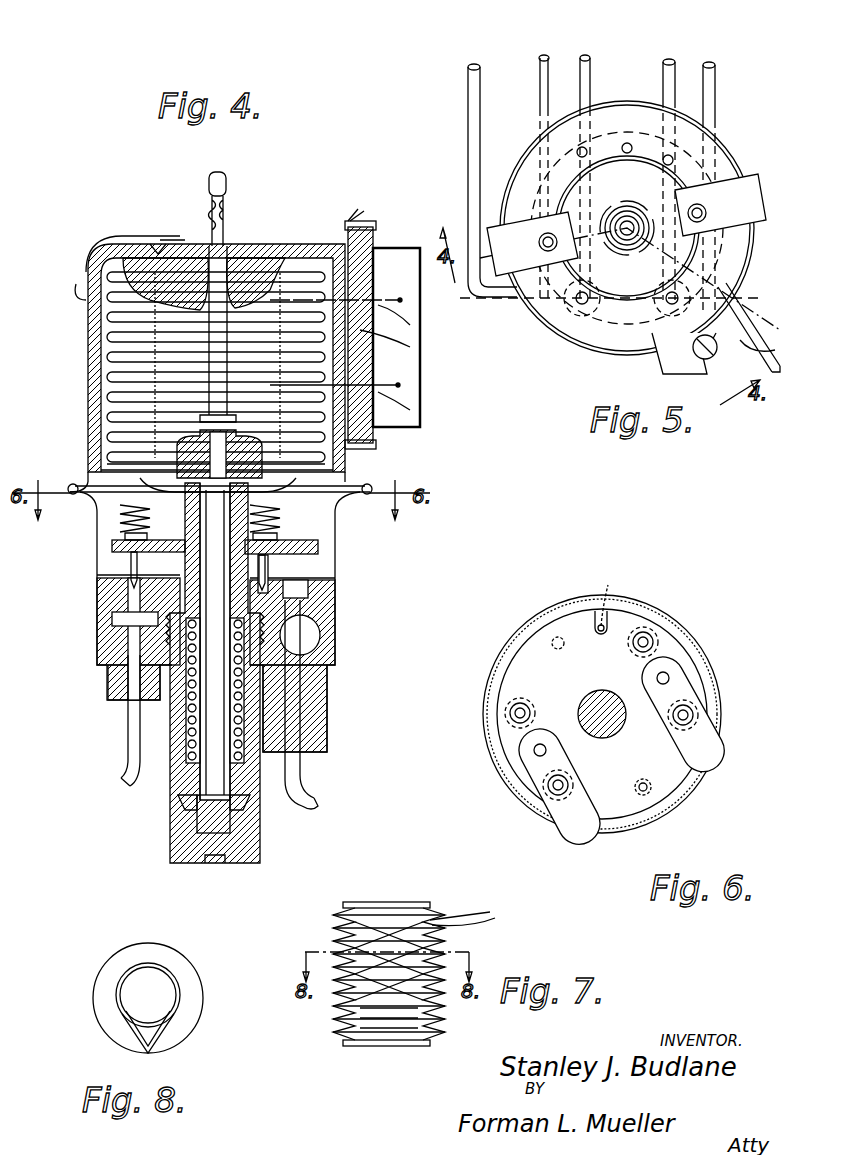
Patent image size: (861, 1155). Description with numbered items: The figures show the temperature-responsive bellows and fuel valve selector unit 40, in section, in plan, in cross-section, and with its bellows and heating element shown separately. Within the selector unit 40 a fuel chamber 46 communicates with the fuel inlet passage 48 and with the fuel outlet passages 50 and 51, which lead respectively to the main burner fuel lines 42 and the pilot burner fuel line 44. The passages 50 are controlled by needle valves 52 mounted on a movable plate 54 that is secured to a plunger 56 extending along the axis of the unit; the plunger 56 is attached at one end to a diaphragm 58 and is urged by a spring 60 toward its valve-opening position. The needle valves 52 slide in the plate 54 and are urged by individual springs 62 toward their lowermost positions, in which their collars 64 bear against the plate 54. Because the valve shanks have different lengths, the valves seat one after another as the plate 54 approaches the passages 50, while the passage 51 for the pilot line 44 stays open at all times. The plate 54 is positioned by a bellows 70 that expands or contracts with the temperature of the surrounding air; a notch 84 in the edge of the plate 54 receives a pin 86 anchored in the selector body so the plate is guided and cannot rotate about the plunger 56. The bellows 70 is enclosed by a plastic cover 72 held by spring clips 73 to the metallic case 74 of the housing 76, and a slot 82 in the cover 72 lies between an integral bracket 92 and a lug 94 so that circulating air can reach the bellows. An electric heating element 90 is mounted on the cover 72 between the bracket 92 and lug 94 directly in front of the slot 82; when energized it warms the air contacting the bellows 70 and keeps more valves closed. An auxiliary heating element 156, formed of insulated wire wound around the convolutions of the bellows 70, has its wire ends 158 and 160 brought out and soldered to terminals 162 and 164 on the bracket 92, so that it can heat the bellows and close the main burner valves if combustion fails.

In FIG. 4, the selector unit 40 is at (338, 636).
In FIG. 5, the selector unit 40 is at (728, 130).
In FIG. 6, the selector unit 40 is at (724, 742).
In FIG. 4, the main burner fuel lines 42 is at (126, 720).
In FIG. 5, the main burner fuel lines 42 is at (478, 66).
In FIG. 5, the pilot burner fuel line 44 is at (550, 62).
In FIG. 4, the fuel chamber 46 is at (320, 524).
In FIG. 6, the fuel chamber 46 is at (500, 650).
In FIG. 4, the fuel inlet passage 48 is at (302, 601).
In FIG. 5, the fuel inlet passage 48 is at (740, 283).
In FIG. 6, the fuel inlet passage 48 is at (652, 792).
In FIG. 4, the fuel outlet passages 50 is at (125, 600).
In FIG. 5, the fuel outlet passages 50 is at (665, 160).
In FIG. 6, the fuel outlet passages 50 is at (662, 626).
In FIG. 5, the pilot outlet passage 51 is at (590, 157).
In FIG. 6, the pilot outlet passage 51 is at (556, 636).
In FIG. 4, the needle valves 52 is at (128, 567).
In FIG. 6, the needle valves 52 is at (660, 648).
In FIG. 4, the needle valve plate 54 is at (320, 549).
In FIG. 6, the needle valve plate 54 is at (525, 650).
In FIG. 4, the plunger 56 is at (195, 805).
In FIG. 6, the plunger 56 is at (614, 724).
In FIG. 4, the diaphragm 58 is at (345, 484).
In FIG. 4, the spring 60 is at (185, 742).
In FIG. 4, the springs 62 is at (120, 518).
In FIG. 4, the collars 64 is at (118, 536).
In FIG. 4, the bellows 70 is at (108, 336).
In FIG. 7, the bellows 70 is at (380, 1046).
In FIG. 8, the bellows 70 is at (100, 980).
In FIG. 4, the plastic cover 72 is at (262, 252).
In FIG. 5, the plastic cover 72 is at (628, 102).
In FIG. 4, the spring clips 73 is at (100, 246).
In FIG. 5, the spring clips 73 is at (752, 176).
In FIG. 4, the metallic case 74 is at (88, 470).
In FIG. 4, the housing 76 is at (336, 575).
In FIG. 6, the housing 76 is at (486, 695).
In FIG. 4, the slot 82 is at (338, 356).
In FIG. 6, the notch 84 is at (608, 585).
In FIG. 6, the pin 86 is at (608, 614).
In FIG. 4, the electric heating element 90 is at (410, 349).
In FIG. 5, the electric heating element 90 is at (712, 342).
In FIG. 4, the bracket 92 is at (397, 255).
In FIG. 5, the bracket 92 is at (745, 345).
In FIG. 5, the lug 94 is at (660, 372).
In FIG. 4, the auxiliary heating element 156 is at (110, 300).
In FIG. 7, the auxiliary heating element 156 is at (392, 930).
In FIG. 8, the auxiliary heating element 156 is at (180, 985).
In FIG. 4, the wire end 158 is at (410, 325).
In FIG. 7, the wire end 158 is at (470, 915).
In FIG. 4, the wire end 160 is at (410, 412).
In FIG. 7, the wire end 160 is at (500, 920).
In FIG. 4, the terminal 162 is at (404, 303).
In FIG. 4, the terminal 164 is at (402, 386).